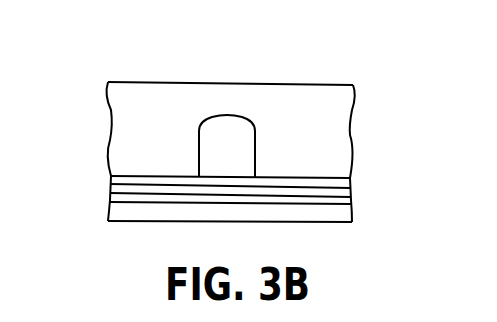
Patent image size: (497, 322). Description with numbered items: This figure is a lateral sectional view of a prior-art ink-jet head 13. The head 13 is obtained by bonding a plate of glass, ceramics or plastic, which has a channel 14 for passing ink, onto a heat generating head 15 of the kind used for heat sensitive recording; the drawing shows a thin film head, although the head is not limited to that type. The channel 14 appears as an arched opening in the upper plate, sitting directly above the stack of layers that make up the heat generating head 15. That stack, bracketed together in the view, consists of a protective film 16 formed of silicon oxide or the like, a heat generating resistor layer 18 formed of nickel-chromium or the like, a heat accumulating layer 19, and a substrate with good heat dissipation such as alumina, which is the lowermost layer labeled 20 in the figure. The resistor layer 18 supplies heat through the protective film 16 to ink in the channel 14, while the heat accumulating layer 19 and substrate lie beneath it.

The head 13 is at (158, 82).
The channel 14 is at (215, 117).
The heat generating head 15 is at (369, 175).
The protective film 16 is at (277, 180).
The heat generating resistor layer 18 is at (313, 190).
The heat accumulating layer 19 is at (338, 204).
The bottom layer 20 is at (255, 217).